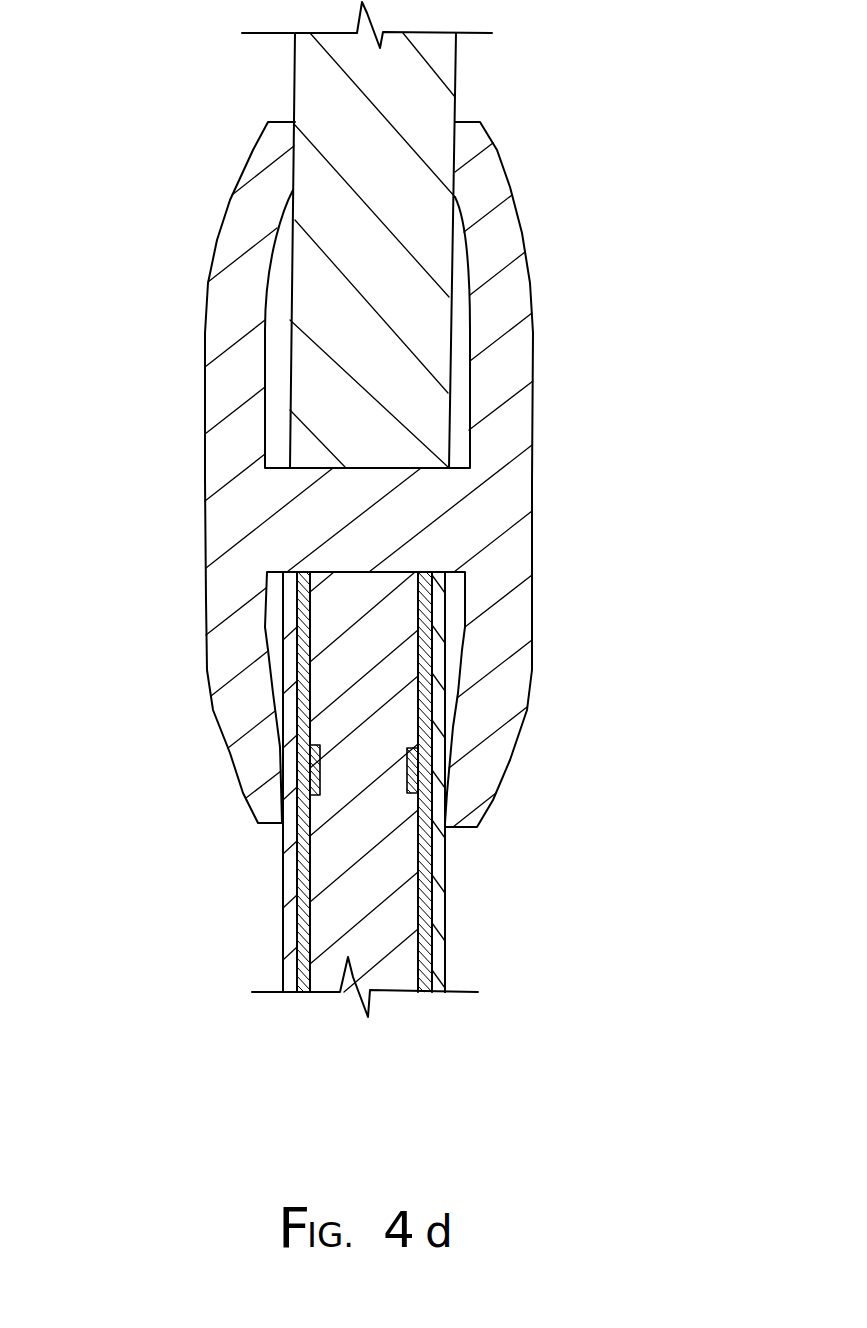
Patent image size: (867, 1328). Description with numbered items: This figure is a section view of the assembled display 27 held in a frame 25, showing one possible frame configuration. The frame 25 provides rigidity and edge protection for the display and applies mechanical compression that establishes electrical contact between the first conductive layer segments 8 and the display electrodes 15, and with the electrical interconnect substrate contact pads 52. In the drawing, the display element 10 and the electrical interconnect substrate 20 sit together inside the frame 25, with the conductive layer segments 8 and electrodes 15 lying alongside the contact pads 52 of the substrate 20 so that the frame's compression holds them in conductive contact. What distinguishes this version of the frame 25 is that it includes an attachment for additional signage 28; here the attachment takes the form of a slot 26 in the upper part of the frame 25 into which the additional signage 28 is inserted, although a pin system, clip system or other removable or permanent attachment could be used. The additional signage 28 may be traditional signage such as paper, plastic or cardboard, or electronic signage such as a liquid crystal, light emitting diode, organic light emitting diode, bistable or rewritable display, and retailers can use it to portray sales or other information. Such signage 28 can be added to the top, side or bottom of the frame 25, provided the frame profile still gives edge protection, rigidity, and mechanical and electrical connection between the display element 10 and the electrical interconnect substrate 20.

The additional signage 28 is at (320, 107).
The frame 25 is at (533, 277).
The slot 26 is at (452, 390).
The first conductive layer segments 8 is at (430, 655).
The display electrodes 15 is at (297, 838).
The electrical interconnect substrate contact pads 52 is at (407, 755).
The electrical interconnect substrate 20 is at (398, 963).
The display element 10 is at (282, 927).
The display 27 is at (344, 1022).